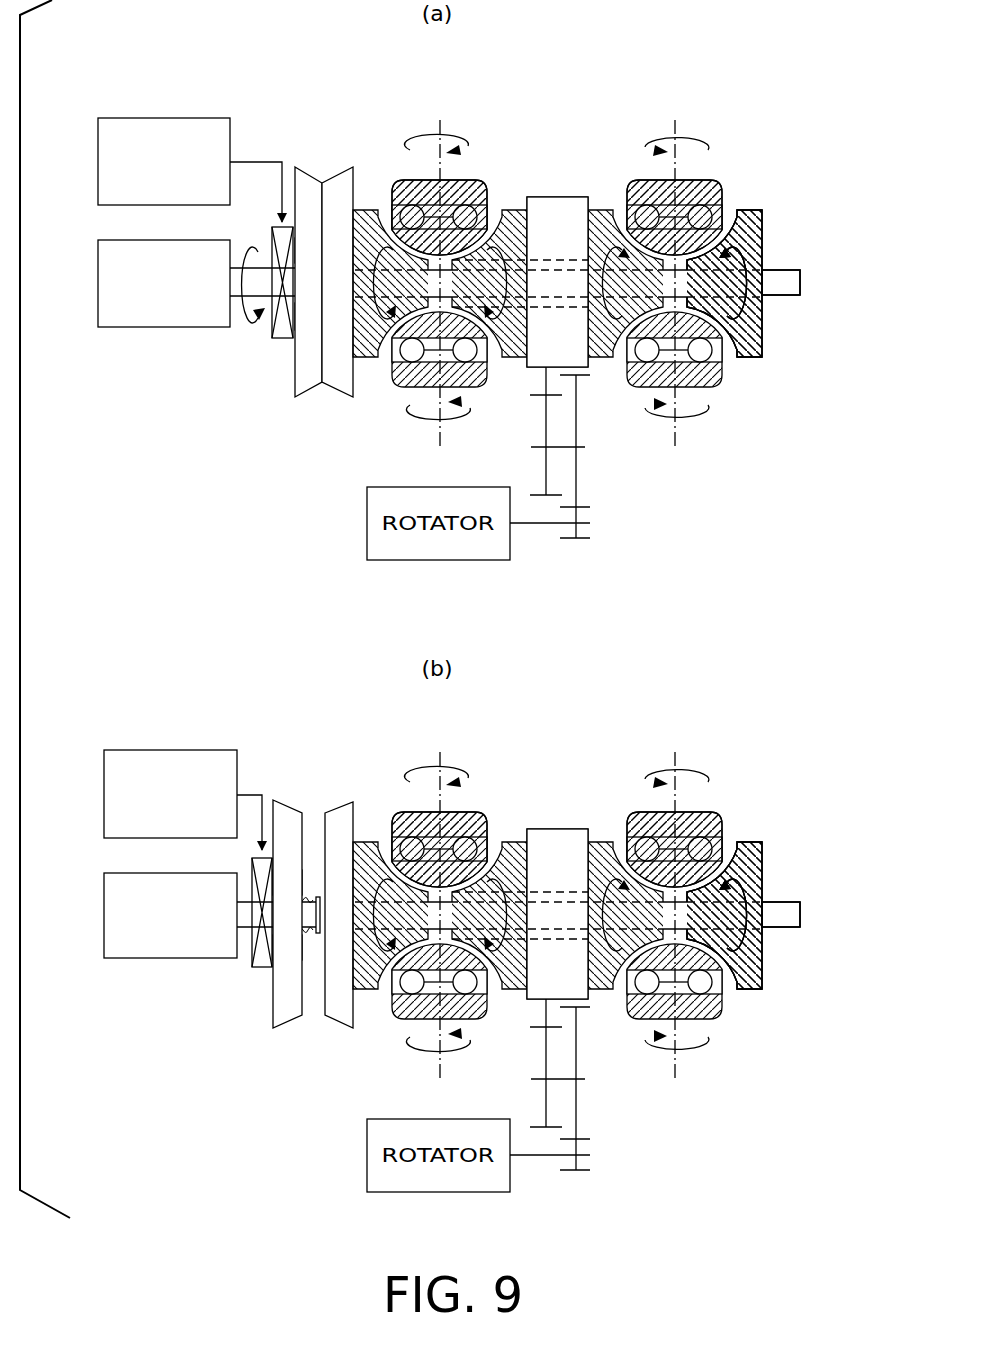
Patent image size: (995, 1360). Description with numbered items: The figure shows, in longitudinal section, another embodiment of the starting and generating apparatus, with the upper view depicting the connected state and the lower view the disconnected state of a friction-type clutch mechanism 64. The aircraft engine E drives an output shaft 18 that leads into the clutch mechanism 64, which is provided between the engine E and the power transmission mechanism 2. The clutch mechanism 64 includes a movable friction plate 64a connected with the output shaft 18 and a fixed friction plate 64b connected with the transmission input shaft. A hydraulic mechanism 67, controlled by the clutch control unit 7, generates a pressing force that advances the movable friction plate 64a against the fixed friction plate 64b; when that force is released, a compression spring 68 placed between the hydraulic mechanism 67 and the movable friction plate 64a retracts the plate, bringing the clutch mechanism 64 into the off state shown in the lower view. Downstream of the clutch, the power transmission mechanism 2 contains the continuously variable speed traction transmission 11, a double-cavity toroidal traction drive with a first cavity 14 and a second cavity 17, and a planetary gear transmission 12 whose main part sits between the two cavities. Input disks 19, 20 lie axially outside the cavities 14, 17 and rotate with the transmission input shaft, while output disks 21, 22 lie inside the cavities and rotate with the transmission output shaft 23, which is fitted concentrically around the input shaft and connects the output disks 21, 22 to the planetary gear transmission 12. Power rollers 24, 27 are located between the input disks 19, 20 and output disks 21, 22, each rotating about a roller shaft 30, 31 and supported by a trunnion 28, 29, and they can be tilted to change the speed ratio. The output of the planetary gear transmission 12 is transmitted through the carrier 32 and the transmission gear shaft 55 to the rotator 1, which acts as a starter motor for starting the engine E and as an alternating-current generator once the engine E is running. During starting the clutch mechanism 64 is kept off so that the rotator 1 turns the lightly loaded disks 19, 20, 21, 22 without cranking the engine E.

The rotator 1 is at (367, 522).
The power transmission mechanism 2 is at (720, 160).
The clutch control unit 7 is at (163, 118).
The continuously variable speed traction transmission 11 is at (585, 168).
The planetary gear transmission 12 is at (550, 197).
The first cavity 14 is at (494, 203).
The second cavity 17 is at (735, 210).
The output shaft of the aircraft engine 18 is at (246, 262).
The input disk 19 is at (366, 360).
The input disk 20 is at (748, 362).
The output disk 21 is at (512, 352).
The output disk 22 is at (595, 358).
The transmission output shaft 23 is at (583, 263).
The power roller 24 is at (470, 190).
The power roller 27 is at (758, 241).
The trunnion 28 is at (400, 183).
The trunnion 29 is at (723, 195).
The roller shaft 30 is at (441, 128).
The roller shaft 31 is at (676, 130).
The carrier 32 is at (540, 378).
The transmission gear shaft 55 is at (584, 448).
The friction-type clutch mechanism 64 is at (318, 581).
The movable friction plate 64a is at (306, 180).
The fixed friction plate 64b is at (336, 180).
The hydraulic mechanism 67 is at (278, 339).
The compression spring 68 is at (300, 332).
The aircraft engine E is at (162, 327).